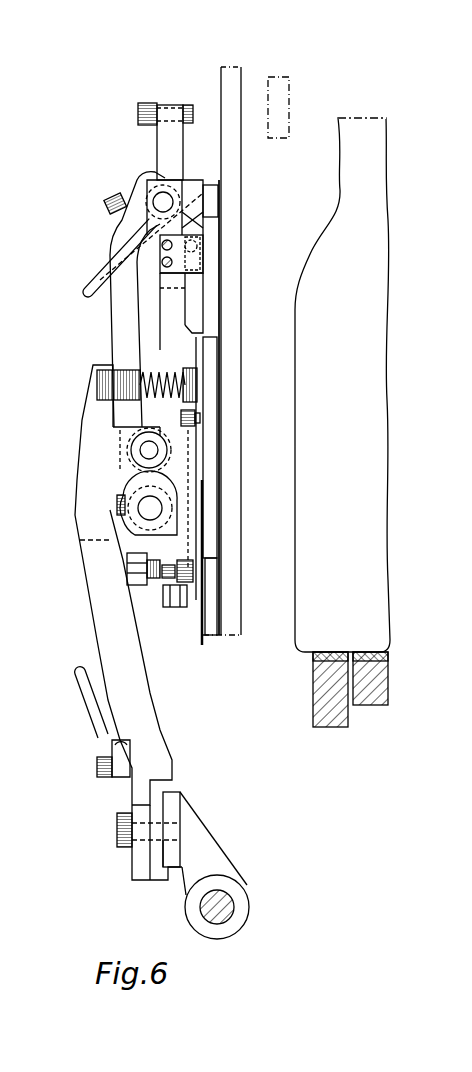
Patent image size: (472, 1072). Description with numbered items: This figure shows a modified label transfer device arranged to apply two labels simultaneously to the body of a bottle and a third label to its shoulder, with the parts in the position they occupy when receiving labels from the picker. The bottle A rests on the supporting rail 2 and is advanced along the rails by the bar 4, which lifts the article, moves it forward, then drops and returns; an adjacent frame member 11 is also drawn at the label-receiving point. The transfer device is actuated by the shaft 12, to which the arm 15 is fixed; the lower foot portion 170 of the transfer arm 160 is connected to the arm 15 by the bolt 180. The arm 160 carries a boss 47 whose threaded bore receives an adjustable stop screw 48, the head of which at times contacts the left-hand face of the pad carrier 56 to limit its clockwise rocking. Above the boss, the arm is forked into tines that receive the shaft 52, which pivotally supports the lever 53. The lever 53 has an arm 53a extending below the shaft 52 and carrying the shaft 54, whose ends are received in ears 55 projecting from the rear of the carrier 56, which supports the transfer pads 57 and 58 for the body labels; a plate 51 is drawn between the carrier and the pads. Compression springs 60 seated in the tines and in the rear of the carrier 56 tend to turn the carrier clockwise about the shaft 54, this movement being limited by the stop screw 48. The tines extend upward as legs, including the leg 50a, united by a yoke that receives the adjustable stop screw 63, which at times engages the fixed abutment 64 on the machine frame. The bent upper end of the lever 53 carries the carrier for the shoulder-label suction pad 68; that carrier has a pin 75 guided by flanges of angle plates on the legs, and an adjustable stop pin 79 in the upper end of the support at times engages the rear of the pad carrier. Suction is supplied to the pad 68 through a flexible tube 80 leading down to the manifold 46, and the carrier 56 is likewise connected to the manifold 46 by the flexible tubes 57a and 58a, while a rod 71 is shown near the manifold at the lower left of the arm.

The rail 11 is at (233, 110).
The fixed abutment 64 is at (282, 103).
The article A is at (357, 328).
The supporting rail 2 is at (335, 713).
The bar 4 is at (370, 700).
The leg 50a is at (168, 138).
The adjustable stop screw 63 is at (193, 92).
The arm of lever 53a is at (140, 183).
The shoulder label transfer pad 68 is at (208, 195).
The pin 75 is at (190, 248).
The lever 53 is at (122, 327).
The flexible tube 80 is at (102, 277).
The adjustable stop pin 79 is at (110, 196).
The compression spring 60 is at (152, 370).
The transfer arm 160 is at (103, 633).
The shaft 52 is at (140, 447).
The ear 55 is at (130, 518).
The shaft 54 is at (155, 507).
The plate 51 is at (170, 447).
The transfer pad 58 is at (215, 368).
The flexible tube 58a is at (192, 418).
The transfer pad 57 is at (212, 595).
The pad carrier 56 is at (202, 645).
The boss 47 is at (130, 563).
The adjustable stop screw 48 is at (172, 572).
The flexible tube 57a is at (173, 607).
The rod 71 is at (85, 688).
The manifold 46 is at (110, 780).
The arm 15 is at (202, 825).
The shaft 12 is at (223, 903).
The bolt 180 is at (127, 827).
The foot portion 170 is at (140, 847).